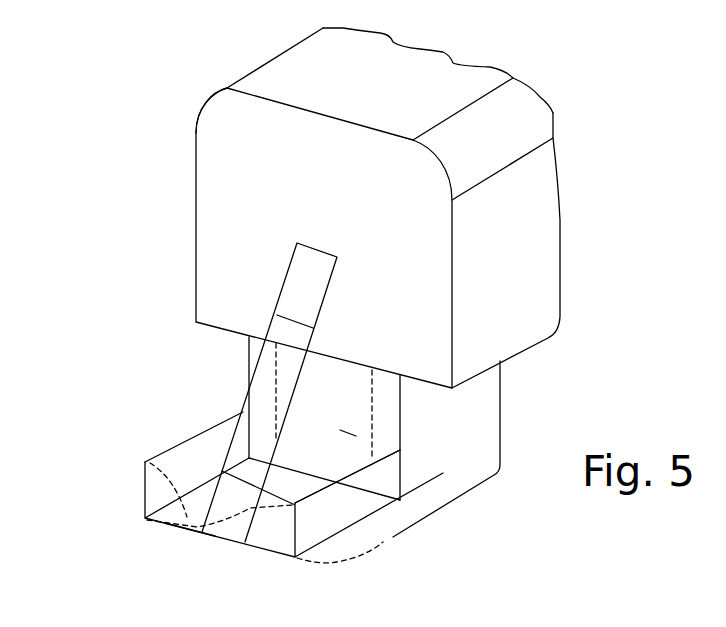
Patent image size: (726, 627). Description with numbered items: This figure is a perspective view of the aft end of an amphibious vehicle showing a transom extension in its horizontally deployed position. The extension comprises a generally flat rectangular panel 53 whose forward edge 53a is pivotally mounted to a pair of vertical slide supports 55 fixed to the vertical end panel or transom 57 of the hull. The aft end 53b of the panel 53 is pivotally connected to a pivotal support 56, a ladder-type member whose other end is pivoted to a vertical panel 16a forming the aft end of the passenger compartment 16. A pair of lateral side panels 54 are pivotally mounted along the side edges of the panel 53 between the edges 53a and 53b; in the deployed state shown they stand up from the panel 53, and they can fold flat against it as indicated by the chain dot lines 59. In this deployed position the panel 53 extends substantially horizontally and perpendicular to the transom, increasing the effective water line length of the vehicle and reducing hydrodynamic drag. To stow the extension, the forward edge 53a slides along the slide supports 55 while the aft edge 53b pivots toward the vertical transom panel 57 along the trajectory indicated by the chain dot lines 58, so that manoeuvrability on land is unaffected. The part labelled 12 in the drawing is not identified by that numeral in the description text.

The support post 12 is at (483, 400).
The passenger compartment 16 is at (515, 275).
The vertical panel 16a is at (227, 133).
The panel 53 is at (272, 540).
The forward edge 53a is at (318, 471).
The aft end 53b is at (187, 532).
The lateral side panels 54 is at (183, 462).
The vertical slide supports 55 is at (277, 382).
The pivotal support 56 is at (282, 282).
The transom 57 is at (348, 433).
The chain dot lines 58 is at (378, 545).
The chain dot lines 59 is at (172, 477).